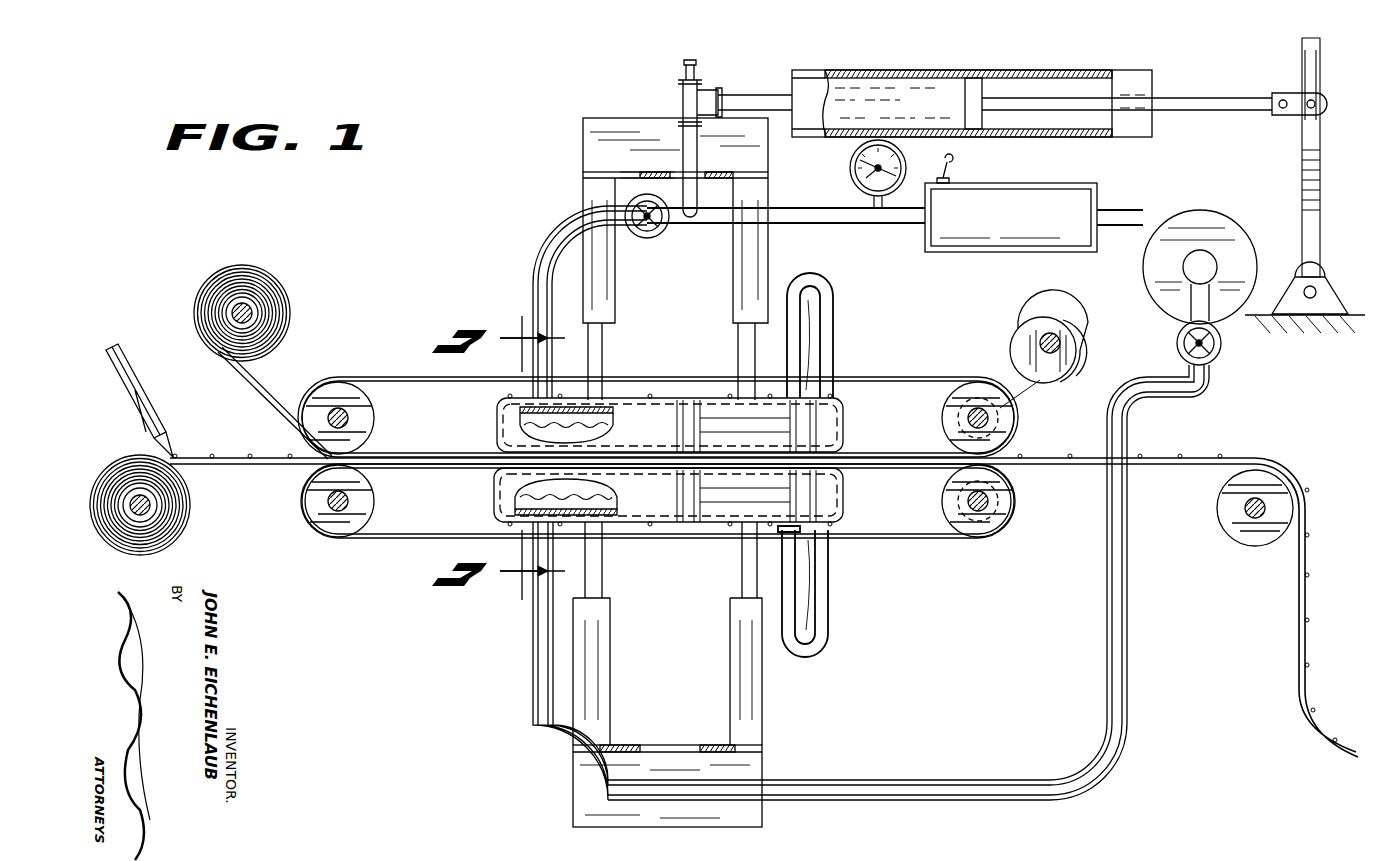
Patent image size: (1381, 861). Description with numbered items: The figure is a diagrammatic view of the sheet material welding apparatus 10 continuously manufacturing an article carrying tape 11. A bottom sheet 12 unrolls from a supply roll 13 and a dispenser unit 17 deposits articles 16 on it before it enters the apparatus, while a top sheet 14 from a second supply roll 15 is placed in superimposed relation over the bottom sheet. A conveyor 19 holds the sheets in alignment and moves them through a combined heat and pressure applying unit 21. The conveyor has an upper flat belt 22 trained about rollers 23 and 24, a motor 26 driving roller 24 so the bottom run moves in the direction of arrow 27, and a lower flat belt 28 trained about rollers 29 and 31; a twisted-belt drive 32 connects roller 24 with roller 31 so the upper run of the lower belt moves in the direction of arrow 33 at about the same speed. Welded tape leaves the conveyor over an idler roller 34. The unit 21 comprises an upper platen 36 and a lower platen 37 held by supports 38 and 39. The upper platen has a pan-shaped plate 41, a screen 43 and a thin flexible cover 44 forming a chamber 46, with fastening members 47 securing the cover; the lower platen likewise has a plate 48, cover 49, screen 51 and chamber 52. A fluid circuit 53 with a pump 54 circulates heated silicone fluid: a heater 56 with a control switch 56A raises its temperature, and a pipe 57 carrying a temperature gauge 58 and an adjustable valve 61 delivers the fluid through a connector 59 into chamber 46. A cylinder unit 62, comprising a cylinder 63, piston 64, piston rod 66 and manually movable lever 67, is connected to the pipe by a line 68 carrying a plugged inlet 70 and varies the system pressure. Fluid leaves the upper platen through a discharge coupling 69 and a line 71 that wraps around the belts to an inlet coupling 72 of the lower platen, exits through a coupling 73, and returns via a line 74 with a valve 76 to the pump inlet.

The sheet material welding apparatus 10 is at (510, 288).
The article carrying tape 11 is at (1243, 452).
The bottom sheet 12 is at (232, 464).
The supply roll 13 is at (170, 530).
The top sheet 14 is at (252, 401).
The supply roll 15 is at (276, 300).
The articles 16 is at (253, 457).
The dispenser unit 17 is at (132, 390).
The conveyor 19 is at (296, 548).
The combined heat and pressure applying unit 21 is at (656, 390).
The upper flat belt 22 is at (898, 380).
The roller 23 is at (348, 398).
The roller 24 is at (1006, 416).
The motor 26 is at (1025, 333).
The arrow 27 is at (918, 443).
The lower flat belt 28 is at (900, 540).
The roller 29 is at (352, 535).
The roller 31 is at (988, 532).
The drive 32 is at (1000, 478).
The arrow 33 is at (918, 482).
The idler roller 34 is at (1250, 534).
The upper platen 36 is at (494, 410).
The lower platen 37 is at (492, 502).
The support 38 is at (592, 196).
The support 39 is at (608, 676).
The pan-shaped flat rectangular plate 41 is at (602, 400).
The screen 43 is at (585, 425).
The cover 44 is at (536, 431).
The chamber 46 is at (540, 432).
The fastening members 47 is at (815, 400).
The pan-shaped plate 48 is at (718, 525).
The cover 49 is at (547, 491).
The screen 51 is at (590, 500).
The chamber 52 is at (572, 488).
The fluid circuit 53 is at (1206, 233).
The pump 54 is at (1240, 248).
The heater 56 is at (1060, 183).
The control switch 56A is at (956, 170).
The pipe 57 is at (870, 226).
The temperature gauge 58 is at (850, 176).
The connector 59 is at (545, 396).
The valve 61 is at (660, 236).
The cylinder unit 62 is at (1059, 81).
The cylinder 63 is at (900, 72).
The piston 64 is at (978, 82).
The piston rod 66 is at (1232, 100).
The lever 67 is at (1322, 195).
The line 68 is at (755, 94).
The discharge coupling 69 is at (782, 398).
The plugged inlet 70 is at (682, 96).
The line 71 is at (833, 332).
The inlet coupling 72 is at (748, 545).
The coupling 73 is at (600, 545).
The line 74 is at (532, 690).
The valve 76 is at (1220, 352).